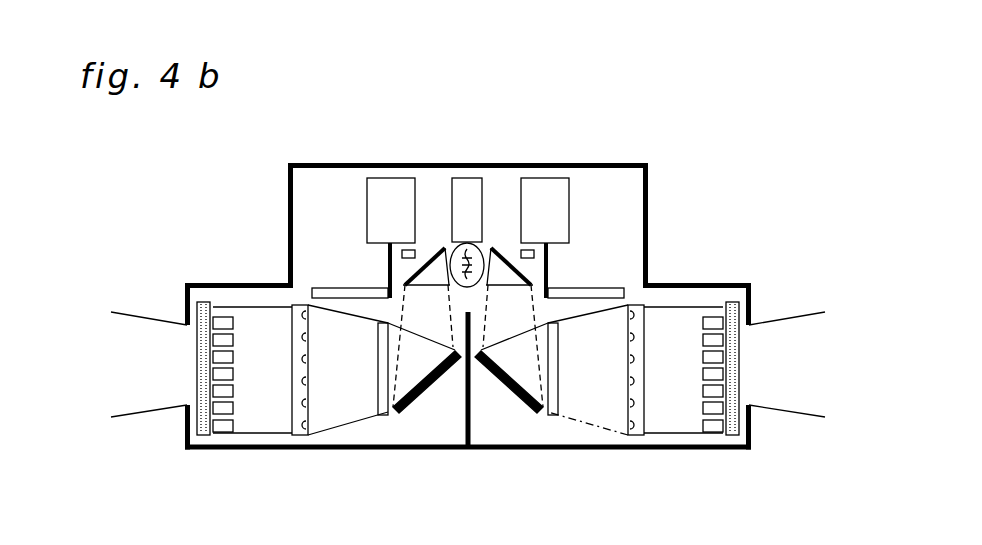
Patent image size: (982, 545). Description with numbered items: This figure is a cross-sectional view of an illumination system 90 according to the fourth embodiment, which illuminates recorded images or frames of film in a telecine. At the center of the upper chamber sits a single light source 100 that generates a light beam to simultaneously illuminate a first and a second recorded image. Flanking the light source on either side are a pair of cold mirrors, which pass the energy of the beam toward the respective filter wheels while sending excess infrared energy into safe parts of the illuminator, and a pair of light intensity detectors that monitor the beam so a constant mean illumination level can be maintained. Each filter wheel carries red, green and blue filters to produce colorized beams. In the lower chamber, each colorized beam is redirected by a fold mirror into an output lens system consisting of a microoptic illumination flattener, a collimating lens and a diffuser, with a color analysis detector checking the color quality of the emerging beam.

The illumination system 90 is at (693, 165).
The light source 100 is at (456, 247).